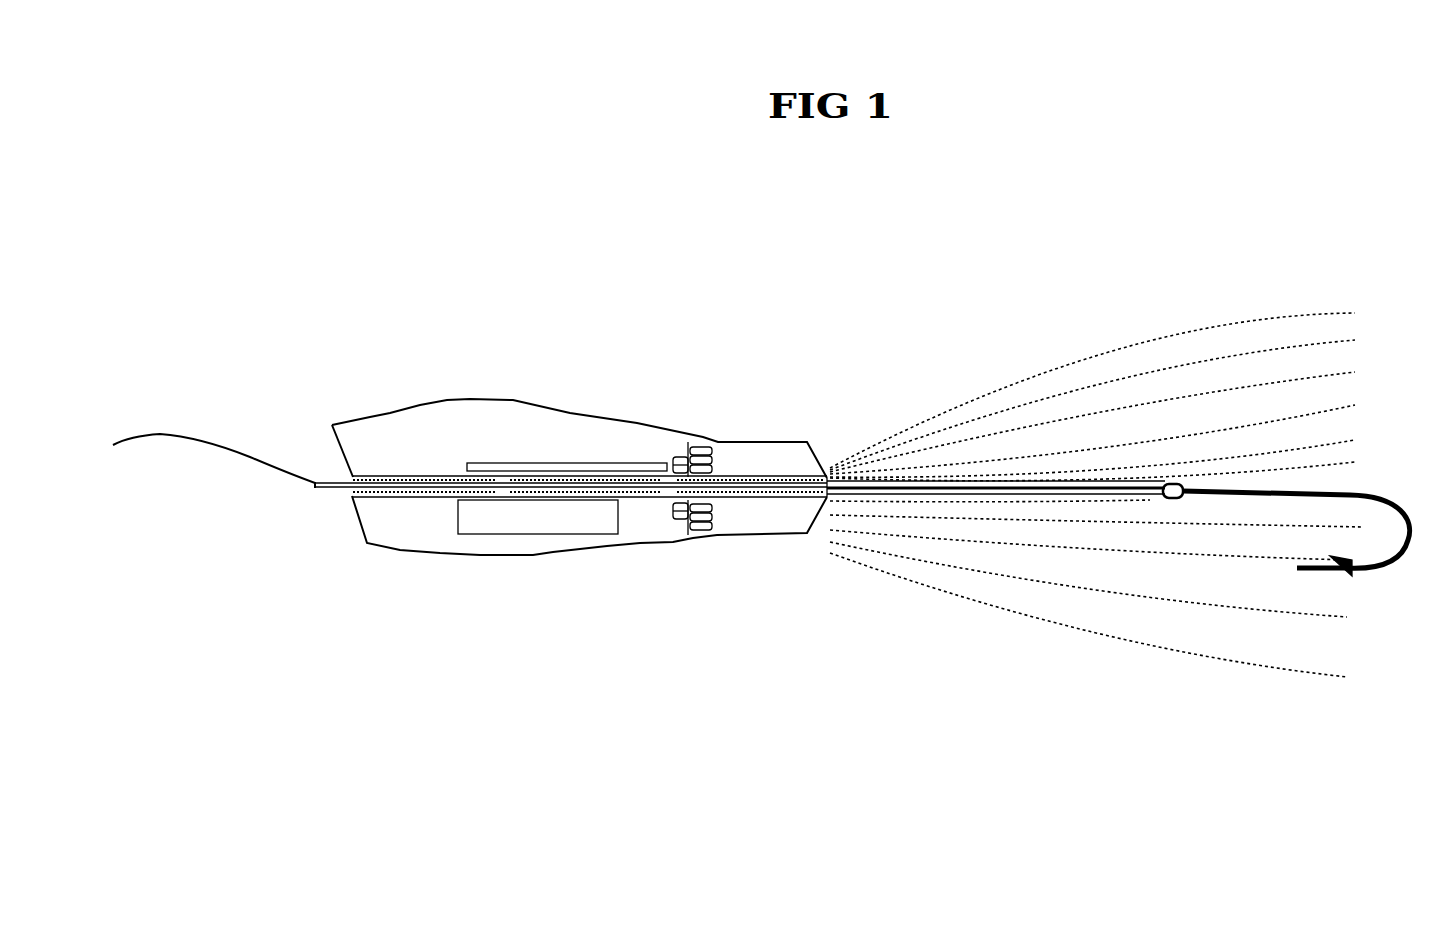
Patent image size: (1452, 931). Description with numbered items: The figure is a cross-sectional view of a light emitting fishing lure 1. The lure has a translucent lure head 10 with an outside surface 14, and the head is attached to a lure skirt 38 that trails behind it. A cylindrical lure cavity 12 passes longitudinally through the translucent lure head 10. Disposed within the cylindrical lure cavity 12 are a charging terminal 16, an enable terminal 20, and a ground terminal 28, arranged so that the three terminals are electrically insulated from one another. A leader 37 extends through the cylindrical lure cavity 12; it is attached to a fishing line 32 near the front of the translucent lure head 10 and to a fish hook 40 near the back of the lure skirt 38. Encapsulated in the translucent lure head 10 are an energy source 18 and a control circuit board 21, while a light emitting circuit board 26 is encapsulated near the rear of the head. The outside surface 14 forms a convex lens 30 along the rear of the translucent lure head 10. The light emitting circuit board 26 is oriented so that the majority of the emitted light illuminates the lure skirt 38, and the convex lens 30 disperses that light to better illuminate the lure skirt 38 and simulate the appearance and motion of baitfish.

The light emitting fishing lure 1 is at (1390, 280).
The translucent lure head 10 is at (474, 576).
The cylindrical lure cavity 12 is at (358, 477).
The outside surface 14 is at (513, 400).
The charging terminal 16 is at (421, 480).
The energy source 18 is at (567, 535).
The enable terminal 20 is at (640, 498).
The control circuit board 21 is at (617, 463).
The light emitting circuit board 26 is at (687, 527).
The ground terminal 28 is at (737, 480).
The convex lens 30 is at (823, 472).
The fishing line 32 is at (161, 435).
The leader 37 is at (330, 488).
The lure skirt 38 is at (1184, 685).
The fish hook 40 is at (1380, 568).